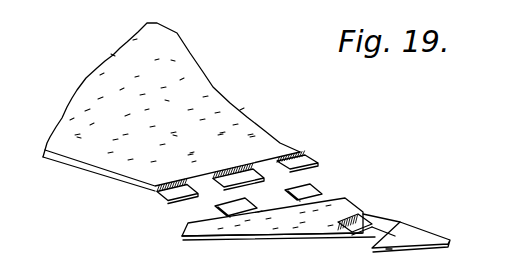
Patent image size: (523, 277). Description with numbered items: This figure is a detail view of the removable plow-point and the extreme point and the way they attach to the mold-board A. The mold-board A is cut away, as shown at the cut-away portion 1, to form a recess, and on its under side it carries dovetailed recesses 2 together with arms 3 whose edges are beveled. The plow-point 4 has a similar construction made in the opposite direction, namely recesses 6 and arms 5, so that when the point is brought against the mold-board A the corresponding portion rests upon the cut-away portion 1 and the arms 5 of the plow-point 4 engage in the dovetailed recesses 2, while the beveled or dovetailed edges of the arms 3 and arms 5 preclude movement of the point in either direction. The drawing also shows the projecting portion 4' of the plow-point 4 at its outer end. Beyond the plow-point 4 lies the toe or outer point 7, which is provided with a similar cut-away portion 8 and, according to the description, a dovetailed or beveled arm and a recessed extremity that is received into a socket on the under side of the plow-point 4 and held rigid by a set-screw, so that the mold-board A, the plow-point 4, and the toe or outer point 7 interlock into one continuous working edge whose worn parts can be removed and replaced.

The mold-board A is at (171, 107).
The cut-away portion 1 is at (306, 158).
The dovetailed recesses 2 is at (244, 175).
The arms 3 is at (205, 191).
The plow-point 4 is at (281, 217).
The projection of plate 4' is at (364, 237).
The arms 5 is at (307, 192).
The recesses 6 is at (248, 206).
The toe or outer point 7 is at (411, 237).
The cut-away portion 8 is at (389, 250).